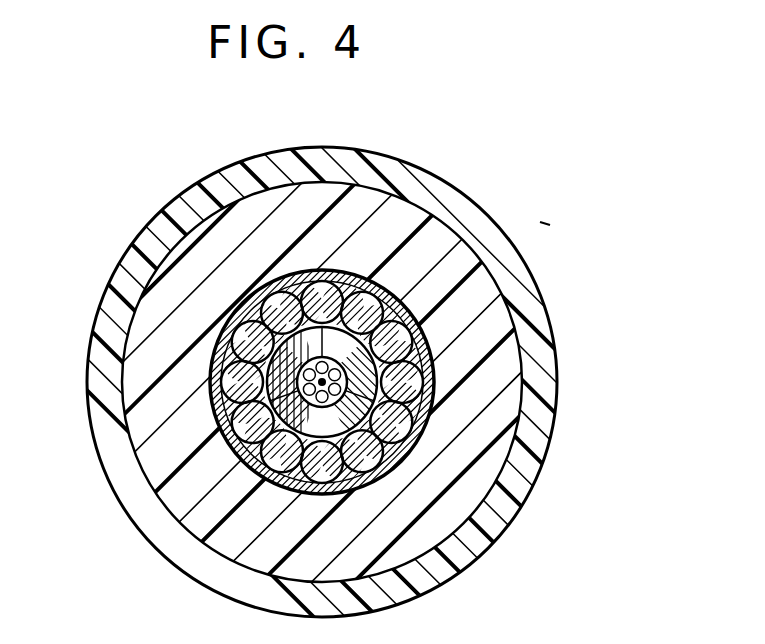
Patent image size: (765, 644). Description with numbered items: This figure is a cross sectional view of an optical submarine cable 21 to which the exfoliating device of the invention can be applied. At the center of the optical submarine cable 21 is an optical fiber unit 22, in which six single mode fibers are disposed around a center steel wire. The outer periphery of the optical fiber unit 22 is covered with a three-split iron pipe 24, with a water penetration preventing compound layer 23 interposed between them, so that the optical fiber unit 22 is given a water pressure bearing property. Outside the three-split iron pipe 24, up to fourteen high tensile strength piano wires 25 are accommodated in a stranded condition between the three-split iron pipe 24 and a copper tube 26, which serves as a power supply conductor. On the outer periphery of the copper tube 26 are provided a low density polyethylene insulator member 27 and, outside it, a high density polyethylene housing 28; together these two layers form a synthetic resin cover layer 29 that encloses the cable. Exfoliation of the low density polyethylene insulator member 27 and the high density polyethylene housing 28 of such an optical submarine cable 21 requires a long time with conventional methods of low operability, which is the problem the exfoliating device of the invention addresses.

The optical submarine cable 21 is at (136, 221).
The optical fiber unit 22 is at (328, 302).
The water penetration preventing compound layer 23 is at (403, 330).
The three-split iron pipe 24 is at (270, 372).
The high tensile strength piano wires 25 is at (233, 403).
The copper tube 26 is at (282, 488).
The low density polyethylene insulator member 27 is at (500, 373).
The high density polyethylene housing 28 is at (533, 447).
The synthetic resin cover layer 29 is at (360, 353).